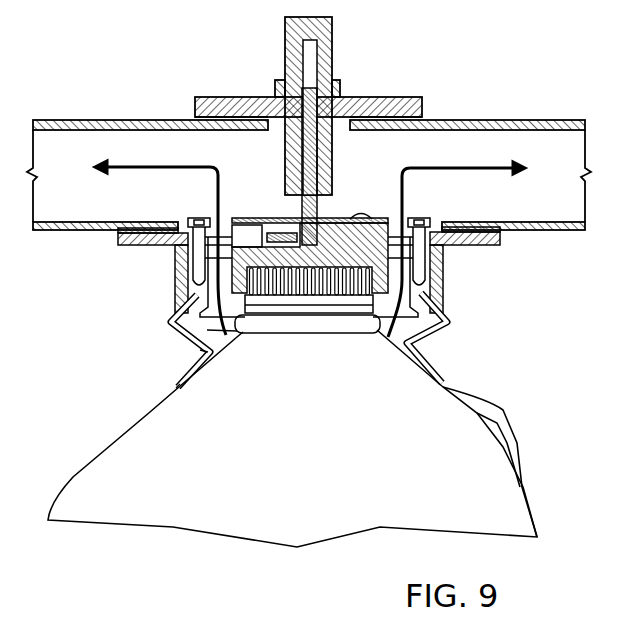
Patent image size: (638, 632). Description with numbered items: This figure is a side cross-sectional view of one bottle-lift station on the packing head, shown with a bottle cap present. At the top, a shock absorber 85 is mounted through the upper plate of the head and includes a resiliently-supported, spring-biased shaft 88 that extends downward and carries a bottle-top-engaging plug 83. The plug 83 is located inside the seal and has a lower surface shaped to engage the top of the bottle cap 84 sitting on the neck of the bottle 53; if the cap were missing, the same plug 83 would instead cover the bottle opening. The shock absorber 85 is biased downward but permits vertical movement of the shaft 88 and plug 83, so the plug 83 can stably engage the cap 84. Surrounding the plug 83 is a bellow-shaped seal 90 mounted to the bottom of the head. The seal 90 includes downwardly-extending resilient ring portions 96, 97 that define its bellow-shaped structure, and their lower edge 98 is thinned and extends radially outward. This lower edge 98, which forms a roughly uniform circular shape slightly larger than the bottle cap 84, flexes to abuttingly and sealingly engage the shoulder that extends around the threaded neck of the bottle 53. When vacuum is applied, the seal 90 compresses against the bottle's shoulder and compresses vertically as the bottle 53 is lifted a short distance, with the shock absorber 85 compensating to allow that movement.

The bottle 53 is at (93, 462).
The bottle-top-engaging plug 83 is at (367, 260).
The bottle cap 84 is at (305, 282).
The shock absorber 85 is at (332, 42).
The shaft 88 is at (317, 210).
The bellow-shaped seal 90 is at (424, 347).
The resilient ring portion 96 is at (188, 333).
The resilient ring portion 97 is at (193, 368).
The lower edge 98 is at (178, 385).